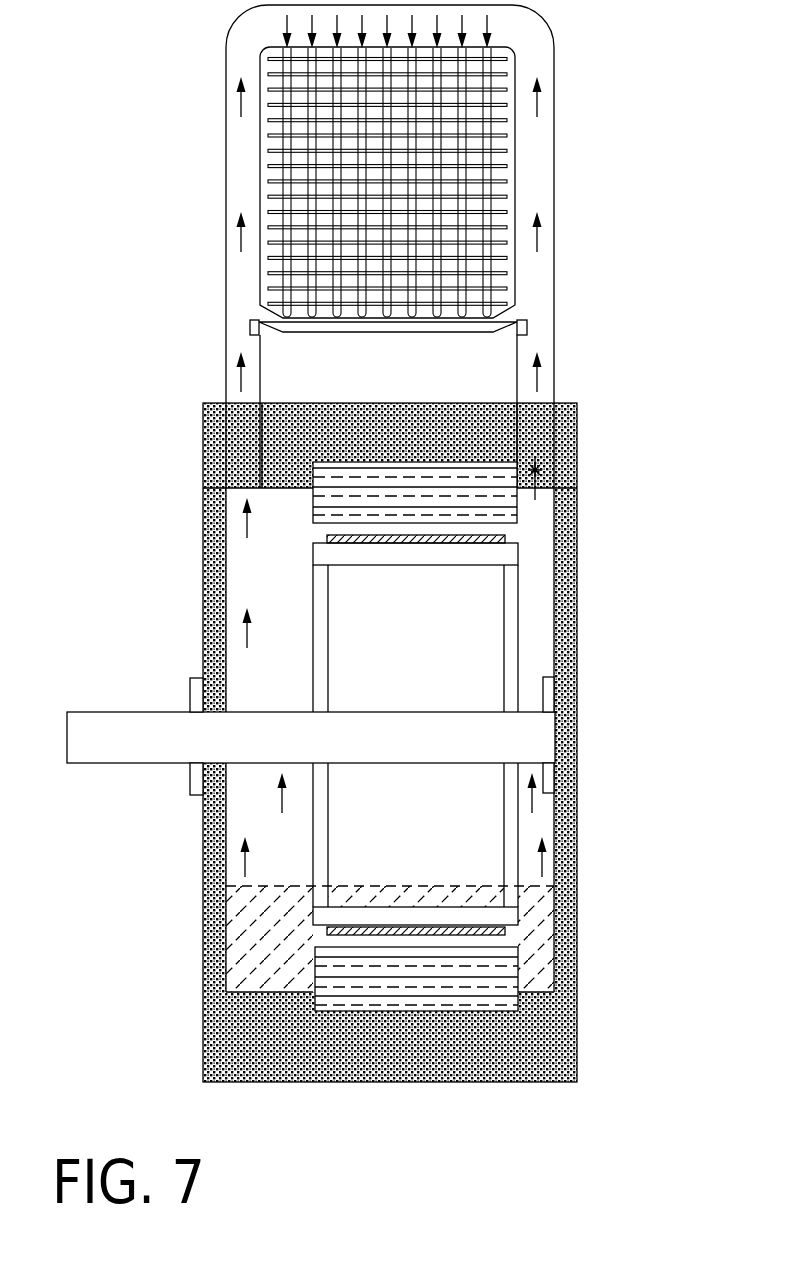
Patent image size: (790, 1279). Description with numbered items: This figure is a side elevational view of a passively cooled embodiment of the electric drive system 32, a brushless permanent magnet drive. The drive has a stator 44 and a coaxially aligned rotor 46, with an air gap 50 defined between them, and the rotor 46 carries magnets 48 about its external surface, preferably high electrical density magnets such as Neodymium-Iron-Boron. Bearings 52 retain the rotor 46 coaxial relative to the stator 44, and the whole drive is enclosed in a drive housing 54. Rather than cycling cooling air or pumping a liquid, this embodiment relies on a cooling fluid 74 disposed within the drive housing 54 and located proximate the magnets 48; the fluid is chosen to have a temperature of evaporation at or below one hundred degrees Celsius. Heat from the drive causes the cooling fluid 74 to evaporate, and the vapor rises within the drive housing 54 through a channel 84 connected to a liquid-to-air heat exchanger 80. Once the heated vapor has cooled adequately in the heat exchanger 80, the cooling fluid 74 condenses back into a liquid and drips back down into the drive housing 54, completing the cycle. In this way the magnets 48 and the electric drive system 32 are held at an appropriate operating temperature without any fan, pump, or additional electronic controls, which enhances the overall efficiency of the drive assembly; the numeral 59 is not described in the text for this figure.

The electric drive system 32 is at (196, 1004).
The drive housing 54 is at (550, 1045).
The cooling fluid 74 is at (252, 935).
The cooling channel 59 is at (322, 740).
The liquid-to-air heat exchanger 80 is at (224, 77).
The channel 84 is at (203, 442).
The rotor 46 is at (431, 835).
The stator 44 is at (337, 497).
The magnets 48 is at (327, 535).
The air gap 50 is at (515, 533).
The bearings 52 is at (190, 695).